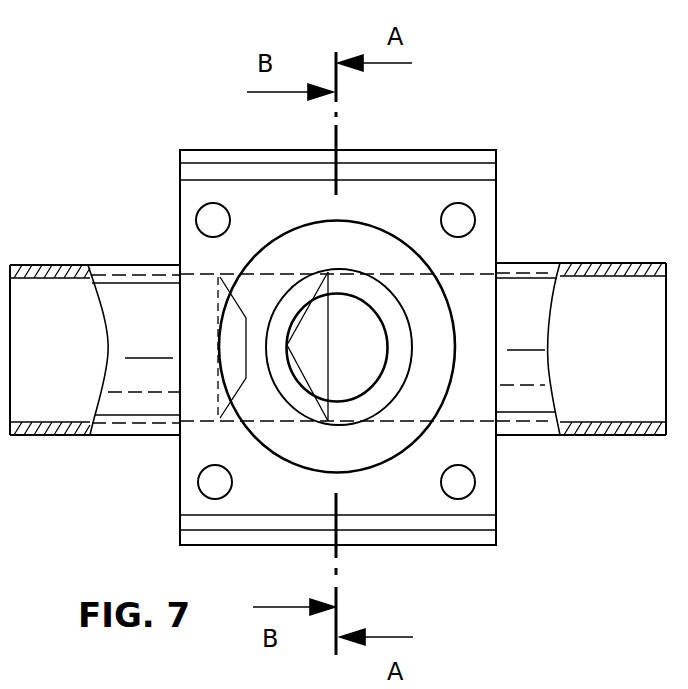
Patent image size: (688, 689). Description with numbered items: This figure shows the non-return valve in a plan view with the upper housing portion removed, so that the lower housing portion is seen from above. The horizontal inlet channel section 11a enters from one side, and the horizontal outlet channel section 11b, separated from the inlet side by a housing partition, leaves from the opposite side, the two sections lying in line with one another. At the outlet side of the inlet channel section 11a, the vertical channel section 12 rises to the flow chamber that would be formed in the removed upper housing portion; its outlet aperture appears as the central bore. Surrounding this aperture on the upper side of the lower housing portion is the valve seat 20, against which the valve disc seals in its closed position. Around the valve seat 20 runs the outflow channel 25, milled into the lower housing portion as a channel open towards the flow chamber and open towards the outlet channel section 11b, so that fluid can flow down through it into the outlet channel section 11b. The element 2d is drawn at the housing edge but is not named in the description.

The outflow channel 25 is at (362, 242).
The housing flange 2d is at (447, 530).
The vertical channel section 12 is at (350, 377).
The valve seat 20 is at (305, 402).
The inlet channel section 11a is at (547, 262).
The outlet channel section 11b is at (122, 437).